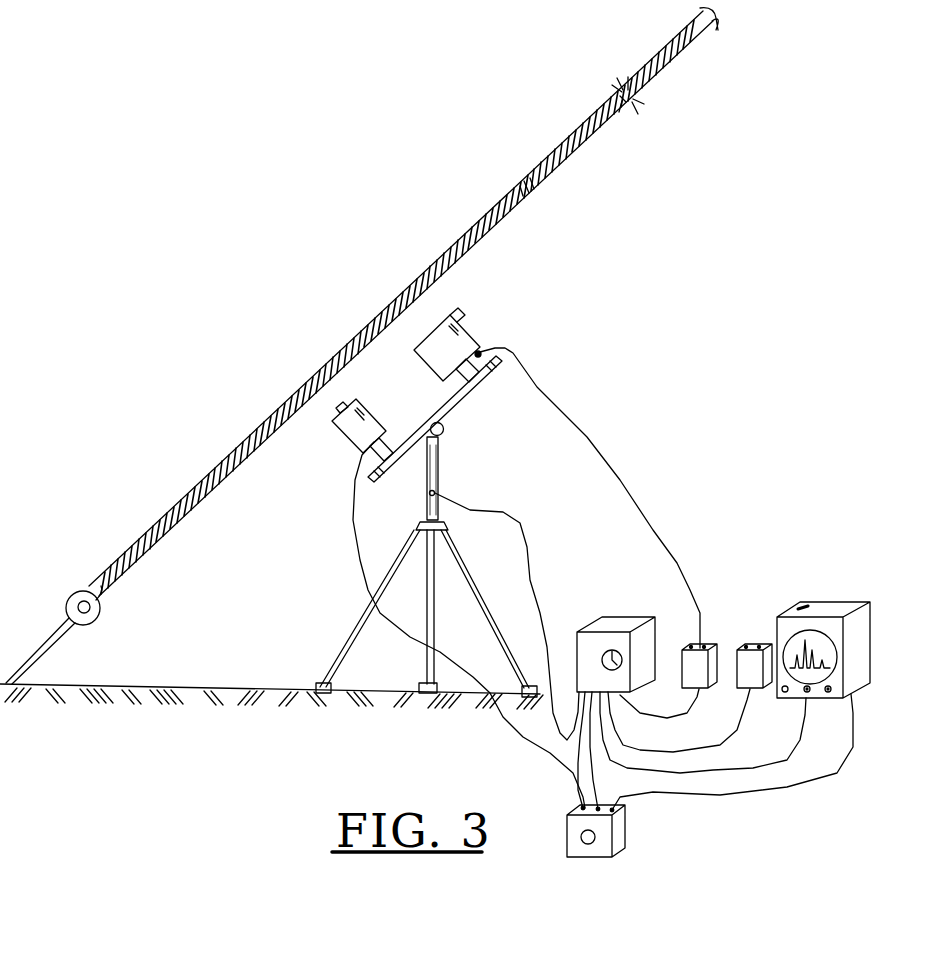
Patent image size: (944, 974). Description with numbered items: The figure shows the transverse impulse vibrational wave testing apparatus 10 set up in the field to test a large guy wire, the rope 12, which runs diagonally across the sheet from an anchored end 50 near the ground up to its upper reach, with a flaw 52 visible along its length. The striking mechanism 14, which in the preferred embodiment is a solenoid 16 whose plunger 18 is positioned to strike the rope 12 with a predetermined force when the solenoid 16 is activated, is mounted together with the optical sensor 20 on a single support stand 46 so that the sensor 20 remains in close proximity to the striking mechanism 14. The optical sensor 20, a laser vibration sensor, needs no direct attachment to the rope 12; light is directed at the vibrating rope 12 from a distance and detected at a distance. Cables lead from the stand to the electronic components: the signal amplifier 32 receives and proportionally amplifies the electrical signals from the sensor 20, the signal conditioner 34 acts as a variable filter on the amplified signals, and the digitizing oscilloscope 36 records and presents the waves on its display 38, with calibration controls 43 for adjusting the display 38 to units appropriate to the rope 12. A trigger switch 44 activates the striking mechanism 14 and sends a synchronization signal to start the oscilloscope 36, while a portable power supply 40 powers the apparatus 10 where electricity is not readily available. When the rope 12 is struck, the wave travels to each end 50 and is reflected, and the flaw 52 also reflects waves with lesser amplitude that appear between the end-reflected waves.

The testing apparatus 10 is at (673, 461).
The rope 12 is at (366, 342).
The striking mechanism 14 is at (391, 408).
The solenoid 16 is at (364, 444).
The plunger 18 is at (334, 409).
The optical sensor 20 is at (462, 331).
The signal amplifier 32 is at (699, 648).
The signal conditioner 34 is at (757, 647).
The digitizing oscilloscope 36 is at (841, 652).
The display 38 is at (820, 672).
The portable power supply 40 is at (637, 618).
The calibration controls 43 is at (828, 693).
The trigger switch 44 is at (617, 828).
The support stand 46 is at (439, 460).
The end 50 is at (66, 600).
The flaw 52 is at (633, 104).